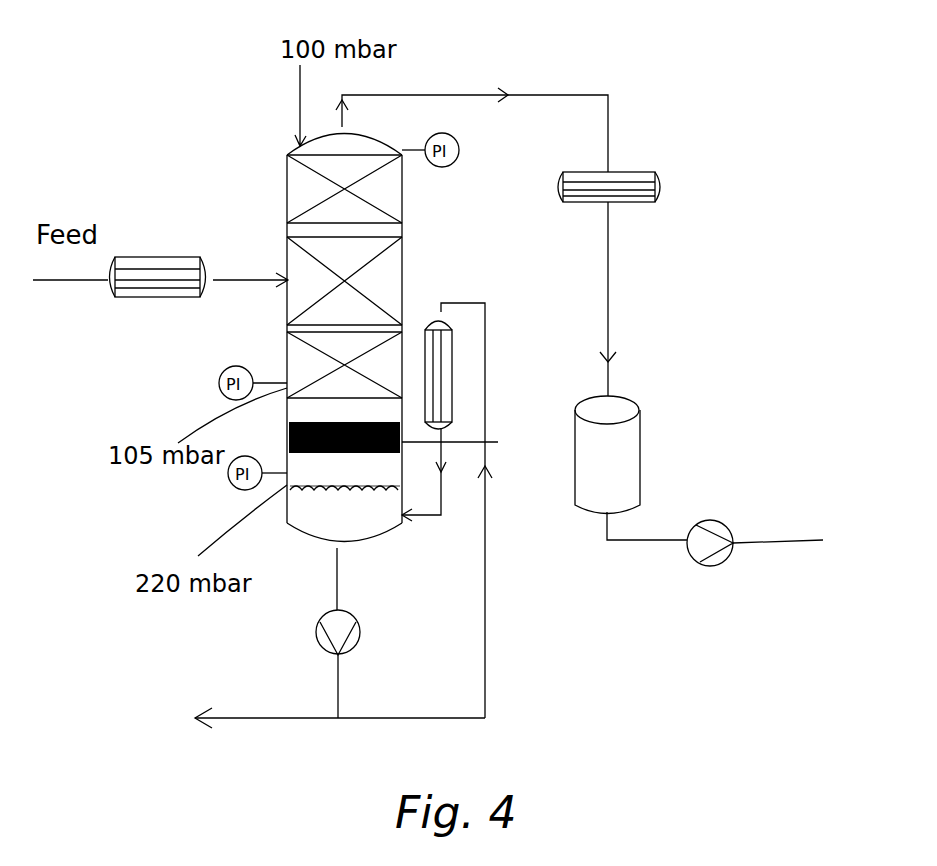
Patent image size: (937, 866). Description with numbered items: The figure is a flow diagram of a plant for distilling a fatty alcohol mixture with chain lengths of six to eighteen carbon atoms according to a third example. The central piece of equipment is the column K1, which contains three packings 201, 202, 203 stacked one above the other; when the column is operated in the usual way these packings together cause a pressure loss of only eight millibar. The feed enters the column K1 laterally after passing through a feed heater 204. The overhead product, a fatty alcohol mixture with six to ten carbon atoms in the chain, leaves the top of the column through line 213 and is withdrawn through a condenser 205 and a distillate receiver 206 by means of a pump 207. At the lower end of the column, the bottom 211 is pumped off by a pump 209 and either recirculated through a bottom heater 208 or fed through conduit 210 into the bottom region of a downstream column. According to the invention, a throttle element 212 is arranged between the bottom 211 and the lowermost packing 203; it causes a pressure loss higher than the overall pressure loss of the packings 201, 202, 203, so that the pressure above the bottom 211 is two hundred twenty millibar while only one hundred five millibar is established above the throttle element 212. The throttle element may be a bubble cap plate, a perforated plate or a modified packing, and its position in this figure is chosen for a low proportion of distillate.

The column K1 is at (448, 256).
The packing 201 is at (390, 197).
The packing 202 is at (398, 241).
The packing 203 is at (288, 350).
The feed heater 204 is at (165, 290).
The condenser 205 is at (622, 172).
The distillate receiver 206 is at (622, 405).
The pump 207 is at (703, 538).
The bottom heater 208 is at (442, 373).
The pump 209 is at (352, 622).
The conduit 210 is at (280, 720).
The bottom 211 is at (378, 528).
The throttle element 212 is at (478, 447).
The vapor outlet line 213 is at (377, 143).